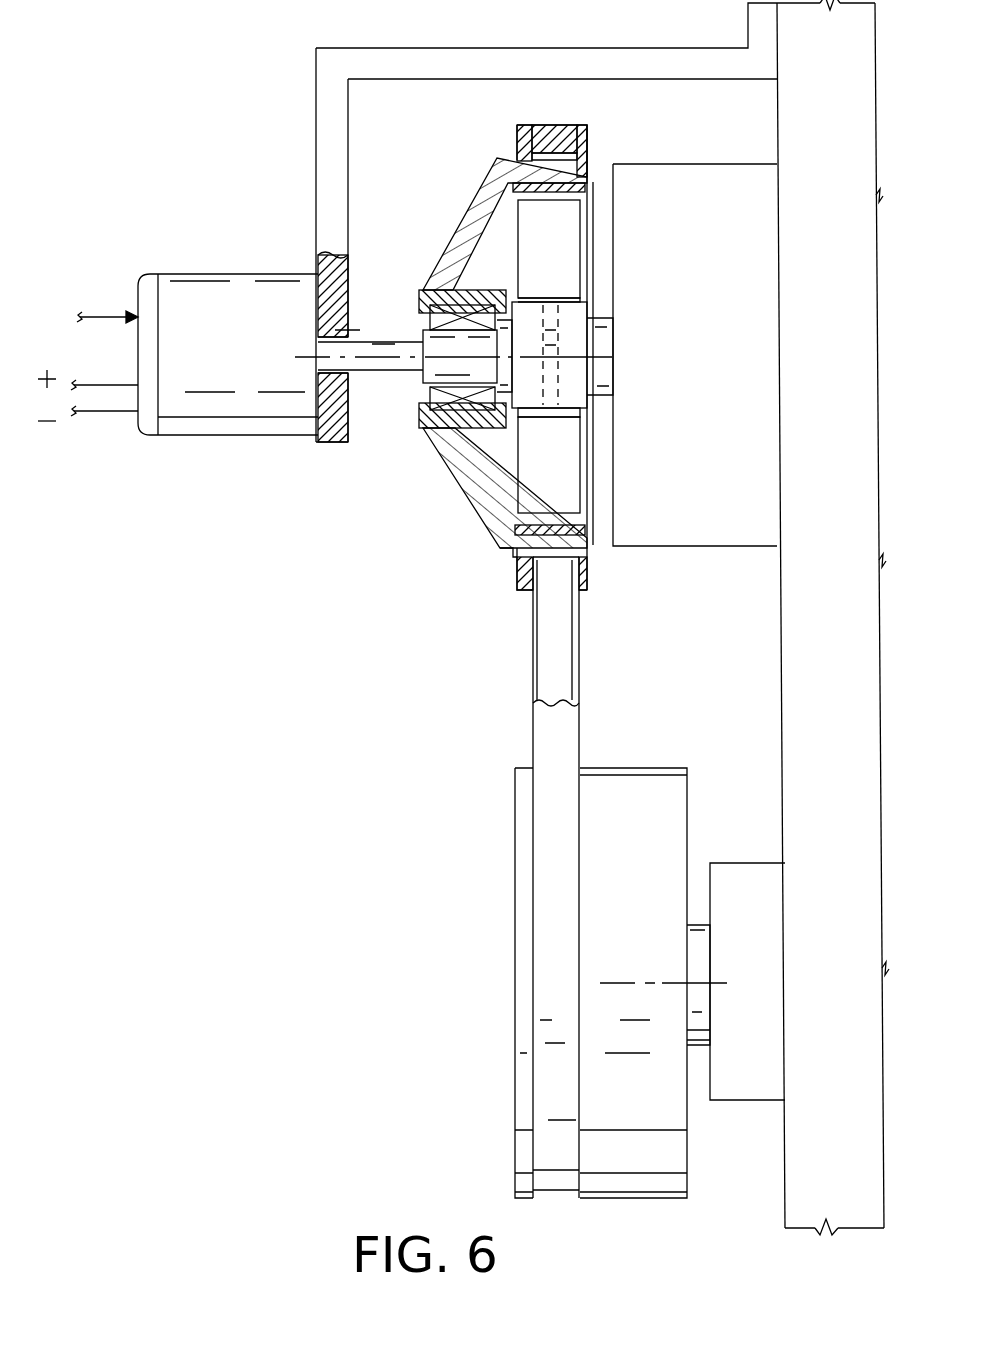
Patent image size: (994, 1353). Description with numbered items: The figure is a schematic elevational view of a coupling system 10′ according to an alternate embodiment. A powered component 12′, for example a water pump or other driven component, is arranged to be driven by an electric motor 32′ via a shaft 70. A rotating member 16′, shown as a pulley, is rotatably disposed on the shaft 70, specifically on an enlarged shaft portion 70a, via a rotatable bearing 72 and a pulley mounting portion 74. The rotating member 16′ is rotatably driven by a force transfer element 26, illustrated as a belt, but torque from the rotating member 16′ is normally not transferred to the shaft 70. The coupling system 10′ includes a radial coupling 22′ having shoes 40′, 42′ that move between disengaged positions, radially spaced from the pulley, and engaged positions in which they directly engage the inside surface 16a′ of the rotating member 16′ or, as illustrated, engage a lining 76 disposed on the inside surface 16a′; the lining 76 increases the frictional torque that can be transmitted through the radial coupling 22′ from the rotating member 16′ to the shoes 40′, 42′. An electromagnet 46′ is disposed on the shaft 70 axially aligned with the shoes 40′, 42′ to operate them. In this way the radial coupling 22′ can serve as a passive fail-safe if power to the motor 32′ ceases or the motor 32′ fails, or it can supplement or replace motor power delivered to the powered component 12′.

The coupling system 10′ is at (266, 644).
The powered component 12′ is at (718, 530).
The rotating member 16′ is at (472, 518).
The inside surface 16a′ is at (573, 525).
The radial coupling 22′ is at (587, 243).
The force transfer element 26 is at (558, 132).
The electric motor 32′ is at (218, 425).
The shoe 40′ is at (567, 258).
The shoe 42′ is at (568, 457).
The electromagnet 46′ is at (573, 330).
The shaft 70 is at (370, 355).
The enlarged shaft portion 70a is at (432, 370).
The rotatable bearing 72 is at (453, 300).
The pulley mounting portion 74 is at (460, 415).
The lining 76 is at (590, 190).